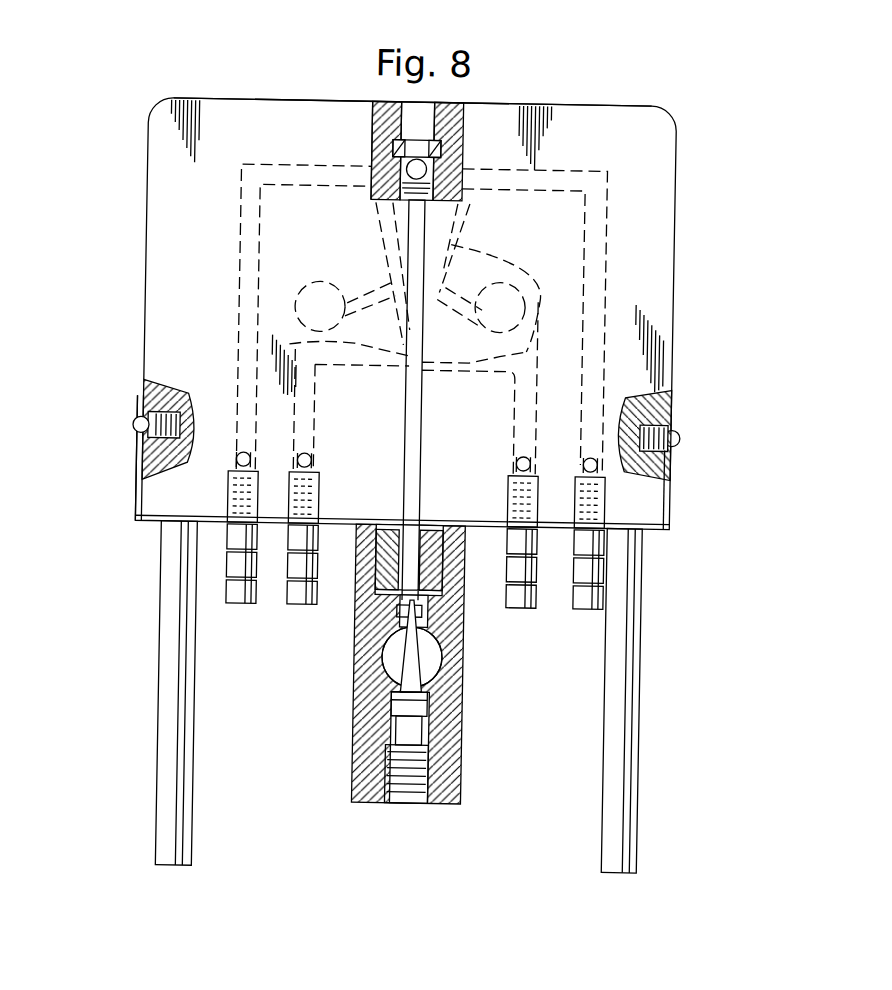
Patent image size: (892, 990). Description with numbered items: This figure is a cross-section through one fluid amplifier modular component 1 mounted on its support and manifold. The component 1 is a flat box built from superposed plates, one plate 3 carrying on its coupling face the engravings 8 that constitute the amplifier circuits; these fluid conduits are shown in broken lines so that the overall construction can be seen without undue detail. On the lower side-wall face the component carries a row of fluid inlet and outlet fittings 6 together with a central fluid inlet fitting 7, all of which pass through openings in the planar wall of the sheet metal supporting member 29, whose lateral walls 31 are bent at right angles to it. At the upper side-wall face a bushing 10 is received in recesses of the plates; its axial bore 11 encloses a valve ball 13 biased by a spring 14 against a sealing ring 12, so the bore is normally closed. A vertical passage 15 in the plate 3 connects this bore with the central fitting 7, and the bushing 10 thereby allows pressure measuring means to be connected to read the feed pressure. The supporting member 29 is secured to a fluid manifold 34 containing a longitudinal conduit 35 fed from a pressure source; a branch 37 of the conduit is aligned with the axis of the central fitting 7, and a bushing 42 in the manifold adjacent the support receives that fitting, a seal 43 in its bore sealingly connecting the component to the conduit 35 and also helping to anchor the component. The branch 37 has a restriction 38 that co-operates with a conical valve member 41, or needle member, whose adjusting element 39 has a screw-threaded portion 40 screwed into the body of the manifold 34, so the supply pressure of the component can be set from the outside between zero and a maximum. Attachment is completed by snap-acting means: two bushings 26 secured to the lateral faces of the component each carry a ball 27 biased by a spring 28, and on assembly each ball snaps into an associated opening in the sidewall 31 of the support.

The fluid amplifier modular component 1 is at (677, 294).
The plate 3 is at (599, 110).
The fluid inlet and outlet fittings 6 is at (305, 605).
The central fluid inlet fitting 7 is at (425, 527).
The engravings 8 is at (600, 291).
The bushing 10 is at (442, 110).
The axial bore 11 is at (371, 122).
The sealing ring 12 is at (437, 148).
The valve ball 13 is at (398, 160).
The spring 14 is at (393, 200).
The vertical passage 15 is at (416, 414).
The bushing 26 is at (650, 405).
The ball 27 is at (685, 432).
The spring 28 is at (669, 480).
The supporting member 29 is at (666, 538).
The lateral walls 31 is at (136, 431).
The fluid manifold 34 is at (472, 720).
The longitudinal conduit 35 is at (391, 690).
The branches 37 is at (397, 622).
The restriction 38 is at (429, 613).
The adjusting element 39 is at (401, 738).
The screw-threaded portion 40 is at (406, 803).
The conical valve member 41 is at (448, 660).
The bushing 42 is at (391, 527).
The seal 43 is at (375, 527).